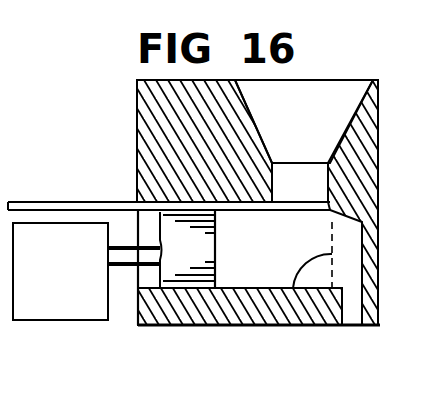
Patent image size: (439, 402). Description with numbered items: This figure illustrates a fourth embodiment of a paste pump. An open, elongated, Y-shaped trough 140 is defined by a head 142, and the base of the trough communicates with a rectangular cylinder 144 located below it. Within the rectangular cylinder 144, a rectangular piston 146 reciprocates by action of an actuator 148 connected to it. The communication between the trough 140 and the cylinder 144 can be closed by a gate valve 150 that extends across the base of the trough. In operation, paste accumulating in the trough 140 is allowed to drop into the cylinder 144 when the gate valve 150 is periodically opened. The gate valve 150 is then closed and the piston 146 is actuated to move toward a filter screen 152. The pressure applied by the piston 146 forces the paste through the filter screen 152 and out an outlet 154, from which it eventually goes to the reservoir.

The Y-shaped trough 140 is at (313, 100).
The head 142 is at (136, 113).
The rectangular cylinder 144 is at (257, 275).
The rectangular piston 146 is at (188, 262).
The actuator 148 is at (83, 320).
The gate valve 150 is at (80, 200).
The filter screen 152 is at (338, 298).
The outlet 154 is at (351, 312).